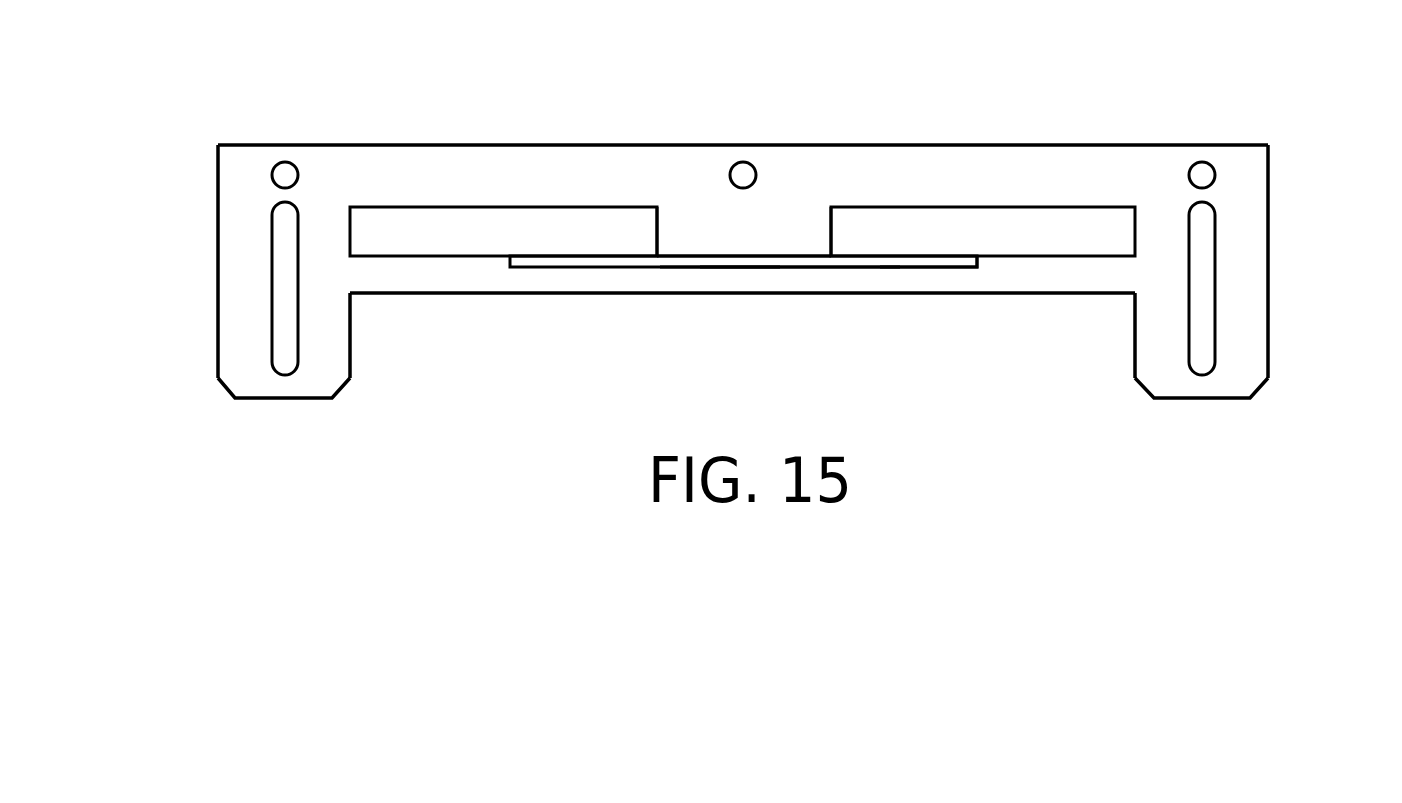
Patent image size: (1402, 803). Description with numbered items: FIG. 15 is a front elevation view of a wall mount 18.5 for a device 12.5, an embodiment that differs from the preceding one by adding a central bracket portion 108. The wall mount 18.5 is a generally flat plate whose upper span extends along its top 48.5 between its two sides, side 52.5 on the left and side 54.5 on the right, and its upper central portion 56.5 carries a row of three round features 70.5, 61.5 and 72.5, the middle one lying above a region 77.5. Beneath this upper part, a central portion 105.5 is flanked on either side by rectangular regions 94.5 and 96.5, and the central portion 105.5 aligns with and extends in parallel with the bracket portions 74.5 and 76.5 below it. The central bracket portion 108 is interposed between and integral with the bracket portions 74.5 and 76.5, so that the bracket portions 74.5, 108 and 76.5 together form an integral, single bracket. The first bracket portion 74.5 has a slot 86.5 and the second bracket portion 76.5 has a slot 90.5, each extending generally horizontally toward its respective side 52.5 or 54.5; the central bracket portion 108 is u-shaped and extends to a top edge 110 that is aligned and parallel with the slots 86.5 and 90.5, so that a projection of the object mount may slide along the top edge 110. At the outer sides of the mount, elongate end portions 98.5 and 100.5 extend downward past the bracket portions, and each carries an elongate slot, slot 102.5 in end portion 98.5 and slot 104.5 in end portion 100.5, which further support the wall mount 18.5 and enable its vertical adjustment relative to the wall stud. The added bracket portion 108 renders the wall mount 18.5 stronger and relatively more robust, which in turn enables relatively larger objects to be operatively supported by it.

The device 12.5 is at (749, 227).
The wall mount 18.5 is at (749, 247).
The top edge 48.5 is at (551, 143).
The side 52.5 is at (218, 228).
The side 54.5 is at (1268, 245).
The central web 56.5 is at (742, 249).
The central aperture 61.5 is at (743, 162).
The first aperture 70.5 is at (285, 162).
The second aperture 72.5 is at (1203, 162).
The bracket portion 74.5 is at (459, 304).
The bracket portion 76.5 is at (970, 304).
The central recess 77.5 is at (806, 213).
The slot 86.5 is at (584, 268).
The slot 90.5 is at (893, 268).
The first recess 94.5 is at (510, 257).
The second recess 96.5 is at (980, 256).
The elongate end portion 98.5 is at (232, 322).
The elongate end portion 100.5 is at (1245, 328).
The elongate slot 102.5 is at (272, 350).
The elongate slot 104.5 is at (1215, 351).
The central portion 105.5 is at (763, 235).
The central bracket portion 108 is at (720, 281).
The top edge 110 is at (798, 268).